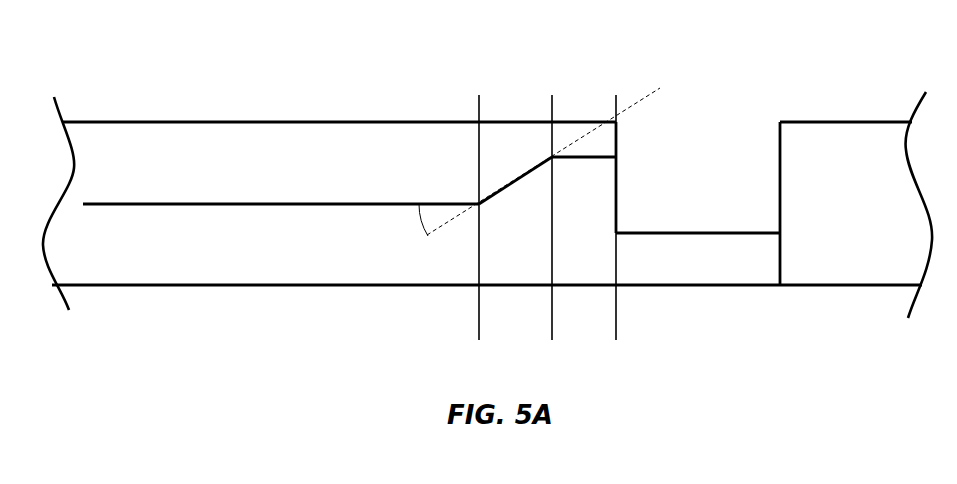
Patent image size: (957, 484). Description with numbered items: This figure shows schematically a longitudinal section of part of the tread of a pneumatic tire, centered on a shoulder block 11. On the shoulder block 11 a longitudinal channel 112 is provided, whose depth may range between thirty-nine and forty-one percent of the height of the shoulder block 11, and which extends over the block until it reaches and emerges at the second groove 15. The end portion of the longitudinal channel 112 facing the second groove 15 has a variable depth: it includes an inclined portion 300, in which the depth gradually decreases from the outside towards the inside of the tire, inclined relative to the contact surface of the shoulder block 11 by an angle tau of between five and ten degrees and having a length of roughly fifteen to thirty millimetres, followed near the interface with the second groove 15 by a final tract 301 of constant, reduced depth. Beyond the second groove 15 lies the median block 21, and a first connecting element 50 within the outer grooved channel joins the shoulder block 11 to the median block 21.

The shoulder block 11 is at (160, 302).
The first connecting element 50 is at (740, 292).
The longitudinal channel 112 is at (467, 120).
The inclined portion 300 is at (503, 96).
The final tract 301 is at (583, 96).
The second groove 15 is at (731, 103).
The median block 21 is at (864, 108).